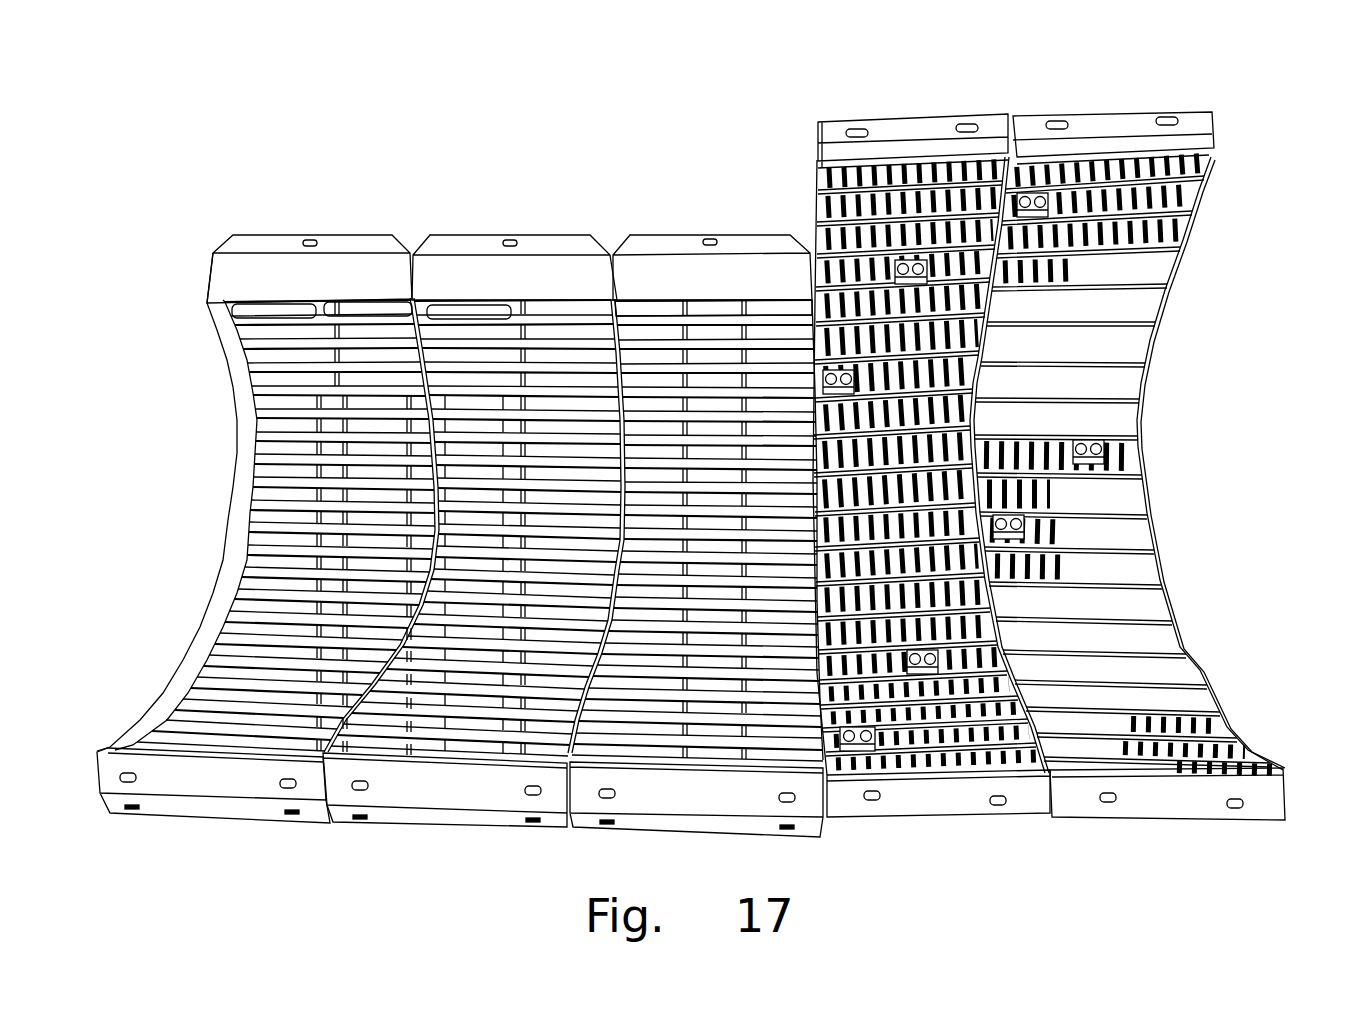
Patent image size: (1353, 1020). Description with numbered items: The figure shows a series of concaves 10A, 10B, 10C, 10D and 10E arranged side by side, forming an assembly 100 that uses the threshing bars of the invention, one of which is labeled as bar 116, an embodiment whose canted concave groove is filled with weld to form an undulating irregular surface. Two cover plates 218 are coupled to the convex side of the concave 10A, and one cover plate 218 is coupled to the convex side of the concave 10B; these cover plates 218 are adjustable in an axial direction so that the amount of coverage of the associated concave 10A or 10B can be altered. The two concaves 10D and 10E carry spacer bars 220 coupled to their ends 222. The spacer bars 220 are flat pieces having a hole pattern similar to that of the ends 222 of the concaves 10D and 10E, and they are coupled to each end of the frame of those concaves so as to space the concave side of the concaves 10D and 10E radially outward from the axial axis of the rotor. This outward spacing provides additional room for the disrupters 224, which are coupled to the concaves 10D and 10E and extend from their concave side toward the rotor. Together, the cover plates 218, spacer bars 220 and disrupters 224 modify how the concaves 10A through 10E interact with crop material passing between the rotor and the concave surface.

The concave assembly 100 is at (892, 82).
The concave 10A is at (320, 212).
The concave 10B is at (512, 212).
The concave 10C is at (703, 216).
The concave 10D is at (960, 100).
The concave 10E is at (1124, 96).
The bar 116 is at (650, 310).
The cover plate 218 is at (360, 310).
The spacer bar 220 is at (835, 120).
The end 222 is at (1213, 150).
The disrupter 224 is at (1013, 533).